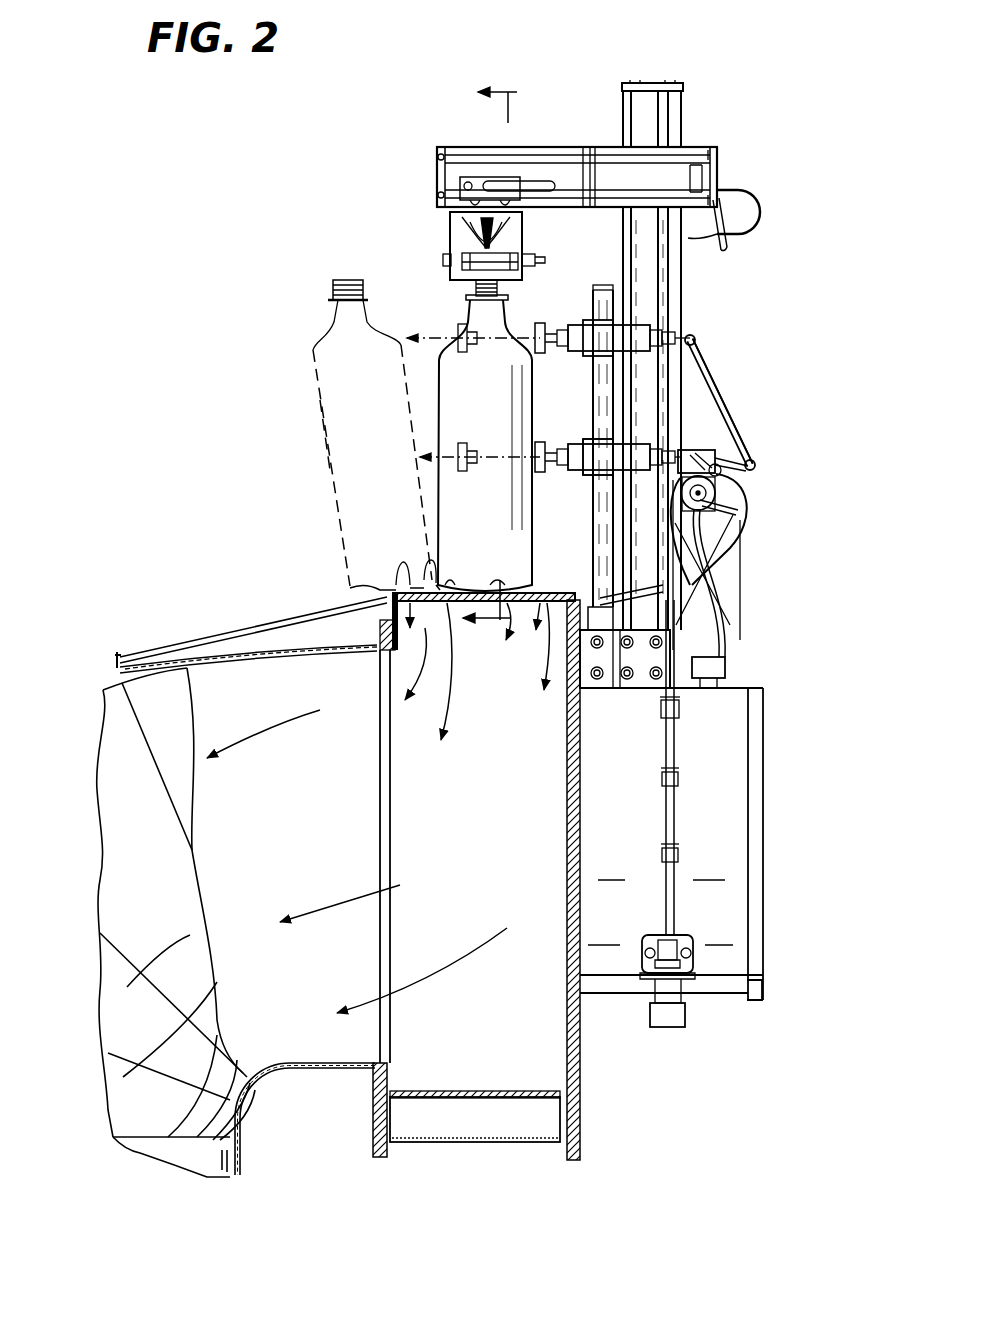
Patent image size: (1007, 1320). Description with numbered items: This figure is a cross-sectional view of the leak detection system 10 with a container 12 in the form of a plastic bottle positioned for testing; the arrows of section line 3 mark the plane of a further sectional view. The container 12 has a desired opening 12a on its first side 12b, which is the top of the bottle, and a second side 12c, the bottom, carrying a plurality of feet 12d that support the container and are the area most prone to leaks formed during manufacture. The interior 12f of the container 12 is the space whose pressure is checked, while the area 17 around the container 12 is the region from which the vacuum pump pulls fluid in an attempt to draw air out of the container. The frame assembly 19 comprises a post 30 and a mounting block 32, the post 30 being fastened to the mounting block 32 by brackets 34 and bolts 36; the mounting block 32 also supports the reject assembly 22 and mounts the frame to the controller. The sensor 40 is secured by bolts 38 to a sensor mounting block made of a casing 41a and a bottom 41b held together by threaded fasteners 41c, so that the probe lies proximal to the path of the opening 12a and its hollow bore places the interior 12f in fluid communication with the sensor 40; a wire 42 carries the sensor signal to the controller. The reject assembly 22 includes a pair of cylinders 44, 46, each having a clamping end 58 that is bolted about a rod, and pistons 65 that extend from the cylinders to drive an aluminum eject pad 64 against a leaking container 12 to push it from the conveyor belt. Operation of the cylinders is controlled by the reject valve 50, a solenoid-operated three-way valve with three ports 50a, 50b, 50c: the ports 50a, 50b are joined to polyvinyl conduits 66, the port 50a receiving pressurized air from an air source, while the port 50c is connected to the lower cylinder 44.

The leak detection system 10 is at (803, 72).
The container 12 is at (300, 322).
The opening 12a is at (348, 293).
The first side 12b is at (338, 282).
The second side 12c is at (387, 596).
The feet 12d is at (394, 583).
The interior 12f is at (330, 397).
The area 17 is at (428, 407).
The frame assembly 19 is at (730, 142).
The reject assembly 22 is at (716, 364).
The post 30 is at (690, 93).
The mounting block 32 is at (641, 684).
The brackets 34 is at (638, 684).
The bolts 36 is at (625, 640).
The bolts 38 is at (455, 243).
The sensor 40 is at (500, 241).
The casing 41a is at (470, 193).
The bottom 41b is at (465, 274).
The threaded fasteners 41c is at (543, 261).
The wire 42 is at (755, 203).
The cylinder 44 is at (645, 448).
The cylinder 46 is at (655, 335).
The reject valve 50 is at (720, 457).
The port 50a is at (742, 518).
The port 50b is at (720, 472).
The port 50c is at (677, 487).
The clamping end 58 is at (697, 337).
The eject pad 64 is at (540, 326).
The pistons 65 is at (553, 330).
The conduits 66 is at (748, 461).
The section line 3 is at (483, 364).